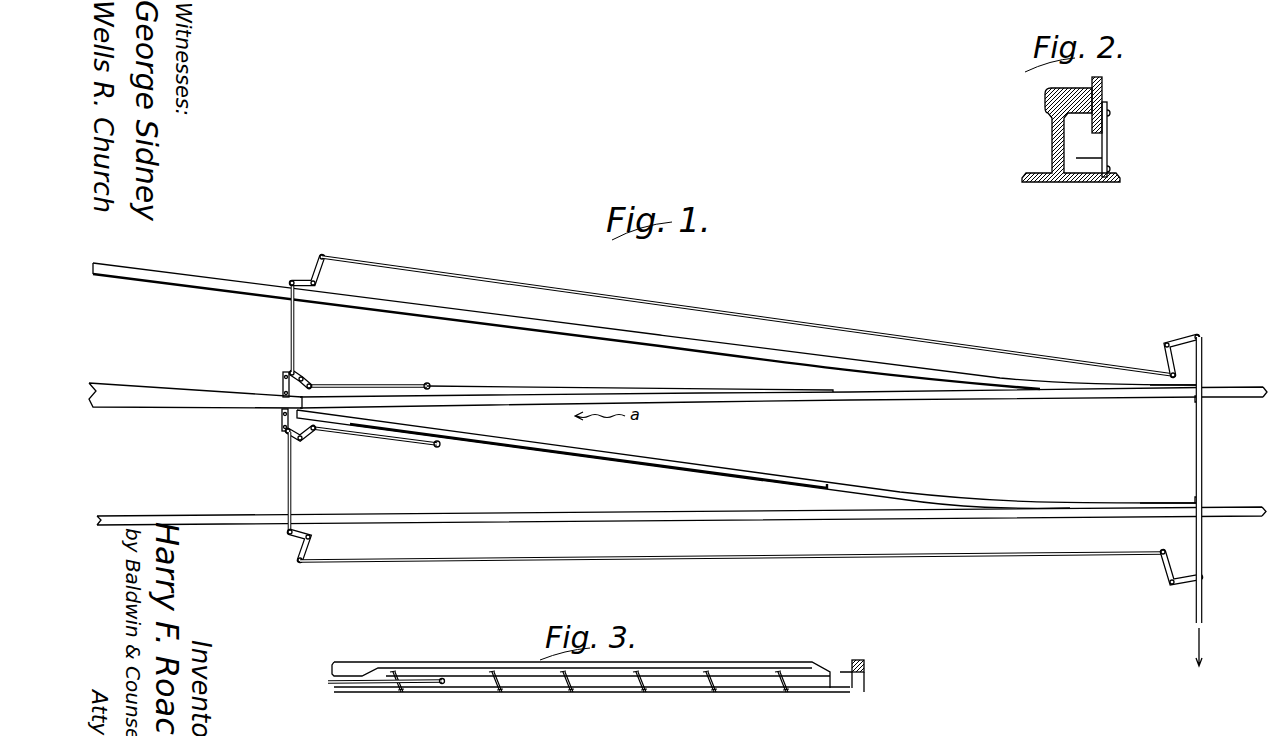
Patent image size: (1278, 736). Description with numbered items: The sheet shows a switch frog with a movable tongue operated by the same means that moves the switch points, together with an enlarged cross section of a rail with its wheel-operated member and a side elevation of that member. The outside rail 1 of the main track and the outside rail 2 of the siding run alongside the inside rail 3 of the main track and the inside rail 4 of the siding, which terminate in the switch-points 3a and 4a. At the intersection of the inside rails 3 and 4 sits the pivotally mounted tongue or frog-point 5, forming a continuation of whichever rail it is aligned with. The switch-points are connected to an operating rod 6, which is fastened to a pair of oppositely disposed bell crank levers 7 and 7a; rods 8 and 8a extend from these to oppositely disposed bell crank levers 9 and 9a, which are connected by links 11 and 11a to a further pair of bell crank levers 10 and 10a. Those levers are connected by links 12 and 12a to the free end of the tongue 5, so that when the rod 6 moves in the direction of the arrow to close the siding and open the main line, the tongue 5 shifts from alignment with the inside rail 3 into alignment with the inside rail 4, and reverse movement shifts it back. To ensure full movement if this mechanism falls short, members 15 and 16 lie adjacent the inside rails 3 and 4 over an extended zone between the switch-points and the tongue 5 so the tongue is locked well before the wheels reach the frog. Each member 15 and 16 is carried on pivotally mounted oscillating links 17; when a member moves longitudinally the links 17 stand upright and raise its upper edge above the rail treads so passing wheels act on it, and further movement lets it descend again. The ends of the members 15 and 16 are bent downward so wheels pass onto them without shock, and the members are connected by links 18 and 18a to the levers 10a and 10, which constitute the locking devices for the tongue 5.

In FIG. 1, the outside rail of main track 1 is at (640, 520).
In FIG. 1, the outside rail of side track 2 is at (497, 322).
In FIG. 1, the inside rail of main track 3 is at (845, 401).
In FIG. 1, the switch-point 3a is at (1176, 397).
In FIG. 1, the inside rail of siding 4 is at (776, 476).
In FIG. 2, the inside rail of siding 4 is at (1064, 138).
In FIG. 3, the inside rail of siding 4 is at (856, 668).
In FIG. 1, the switch-point 4a is at (1166, 500).
In FIG. 1, the movable tongue 5 is at (188, 397).
In FIG. 1, the operating rod 6 is at (1203, 455).
In FIG. 1, the bell crank lever 7 is at (1175, 585).
In FIG. 1, the bell crank lever 7a is at (1180, 341).
In FIG. 1, the rod 8 is at (990, 560).
In FIG. 1, the rod 8a is at (882, 336).
In FIG. 1, the bell crank lever 9 is at (312, 547).
In FIG. 1, the bell crank lever 9a is at (311, 273).
In FIG. 1, the bell crank lever 10 is at (305, 440).
In FIG. 1, the bell crank lever 10a is at (312, 380).
In FIG. 1, the link 11 is at (286, 476).
In FIG. 1, the link 11a is at (296, 336).
In FIG. 1, the link 12 is at (281, 420).
In FIG. 1, the link 12a is at (282, 383).
In FIG. 1, the wheel-operated member 15 is at (605, 384).
In FIG. 1, the wheel-operated member 16 is at (596, 462).
In FIG. 2, the wheel-operated member 16 is at (1104, 91).
In FIG. 3, the wheel-operated member 16 is at (727, 662).
In FIG. 2, the links 17 is at (1108, 138).
In FIG. 3, the links 17 is at (637, 686).
In FIG. 1, the link 18 is at (396, 384).
In FIG. 1, the link 18a is at (390, 446).
In FIG. 3, the link 18a is at (334, 686).